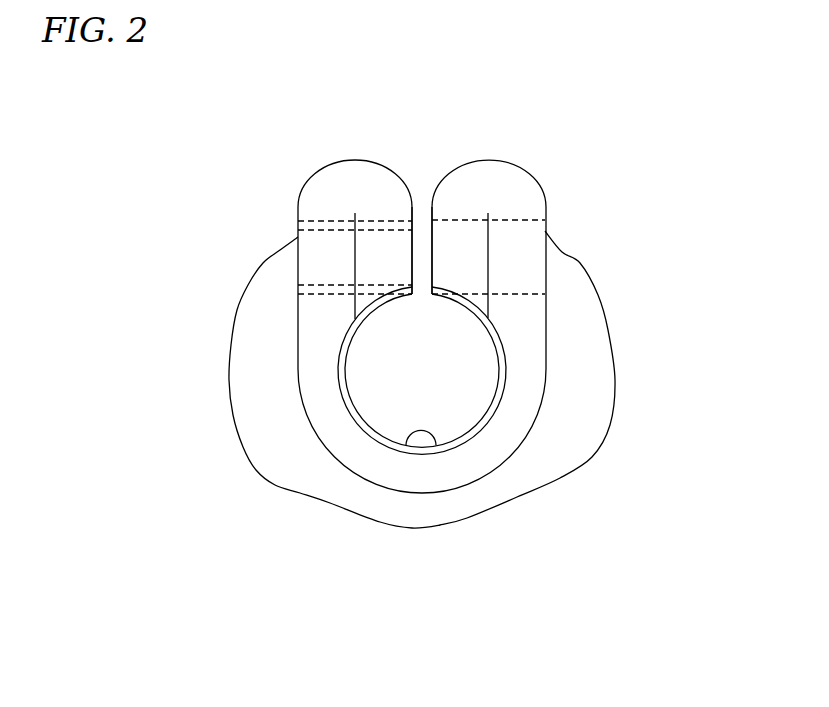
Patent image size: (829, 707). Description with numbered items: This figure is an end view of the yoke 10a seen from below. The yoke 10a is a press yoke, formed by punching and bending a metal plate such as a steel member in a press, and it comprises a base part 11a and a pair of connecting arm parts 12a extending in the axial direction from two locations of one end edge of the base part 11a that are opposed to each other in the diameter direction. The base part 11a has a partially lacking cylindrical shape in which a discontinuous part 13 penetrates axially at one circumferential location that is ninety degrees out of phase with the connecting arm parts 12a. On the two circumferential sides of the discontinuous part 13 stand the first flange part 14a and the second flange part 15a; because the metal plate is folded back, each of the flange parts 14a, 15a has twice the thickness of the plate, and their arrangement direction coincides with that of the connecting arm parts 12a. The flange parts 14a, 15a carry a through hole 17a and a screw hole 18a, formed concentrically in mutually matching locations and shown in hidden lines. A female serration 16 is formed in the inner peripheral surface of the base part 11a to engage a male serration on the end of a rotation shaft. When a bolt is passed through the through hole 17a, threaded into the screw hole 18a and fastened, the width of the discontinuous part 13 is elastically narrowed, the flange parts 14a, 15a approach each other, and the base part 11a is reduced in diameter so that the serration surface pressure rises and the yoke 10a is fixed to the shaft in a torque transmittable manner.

The yoke 10a is at (614, 295).
The base part 11a is at (362, 453).
The connecting arm parts 12a is at (257, 415).
The discontinuous part 13 is at (420, 220).
The first flange part 14a is at (488, 172).
The second flange part 15a is at (343, 177).
The female serration 16 is at (435, 432).
The through hole 17a is at (507, 221).
The screw hole 18a is at (327, 222).